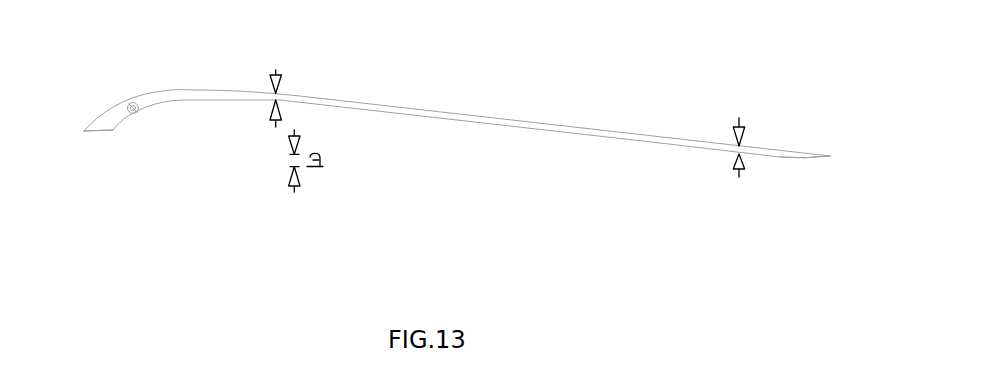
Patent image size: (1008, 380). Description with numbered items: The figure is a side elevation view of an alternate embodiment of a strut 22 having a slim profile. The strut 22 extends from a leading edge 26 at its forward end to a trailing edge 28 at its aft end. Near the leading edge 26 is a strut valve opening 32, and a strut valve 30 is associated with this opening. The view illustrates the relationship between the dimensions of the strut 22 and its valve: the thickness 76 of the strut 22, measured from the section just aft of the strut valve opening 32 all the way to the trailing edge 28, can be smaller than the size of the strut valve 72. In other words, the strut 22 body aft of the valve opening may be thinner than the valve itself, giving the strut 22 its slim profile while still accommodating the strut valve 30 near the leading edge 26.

The strut 22 is at (450, 112).
The leading edge 26 is at (82, 117).
The trailing edge 28 is at (812, 145).
The strut valve 30 is at (138, 110).
The strut valve opening 32 is at (138, 103).
The size of the strut valve 72 is at (290, 157).
The thickness of the strut 76 is at (280, 94).